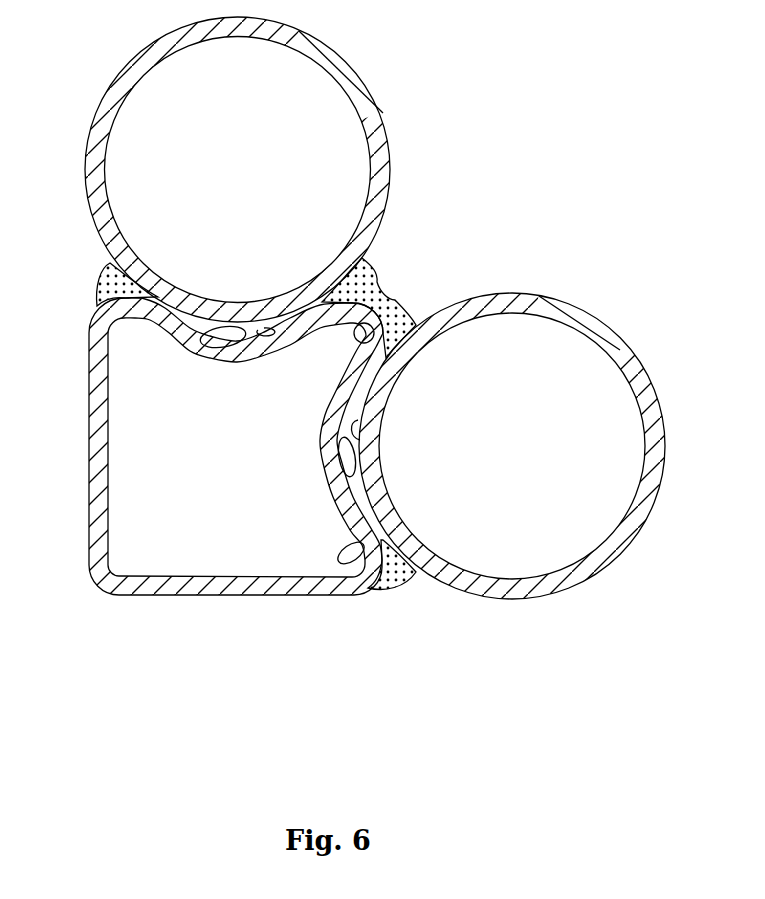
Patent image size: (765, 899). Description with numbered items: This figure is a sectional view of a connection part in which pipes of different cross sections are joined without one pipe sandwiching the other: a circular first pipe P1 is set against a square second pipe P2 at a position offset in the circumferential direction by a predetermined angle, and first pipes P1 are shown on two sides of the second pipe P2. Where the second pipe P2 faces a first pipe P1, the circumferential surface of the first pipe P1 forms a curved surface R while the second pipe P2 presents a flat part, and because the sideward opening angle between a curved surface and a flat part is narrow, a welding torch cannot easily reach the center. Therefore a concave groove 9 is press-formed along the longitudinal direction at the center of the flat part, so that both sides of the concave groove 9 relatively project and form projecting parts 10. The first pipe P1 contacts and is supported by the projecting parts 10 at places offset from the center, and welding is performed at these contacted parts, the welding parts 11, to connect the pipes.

The first pipe P1 is at (383, 157).
The second pipe P2 is at (97, 478).
The concave groove 9 is at (203, 335).
The projecting parts 10 is at (135, 300).
The welding parts 11 is at (103, 290).
The curved surface R is at (258, 330).